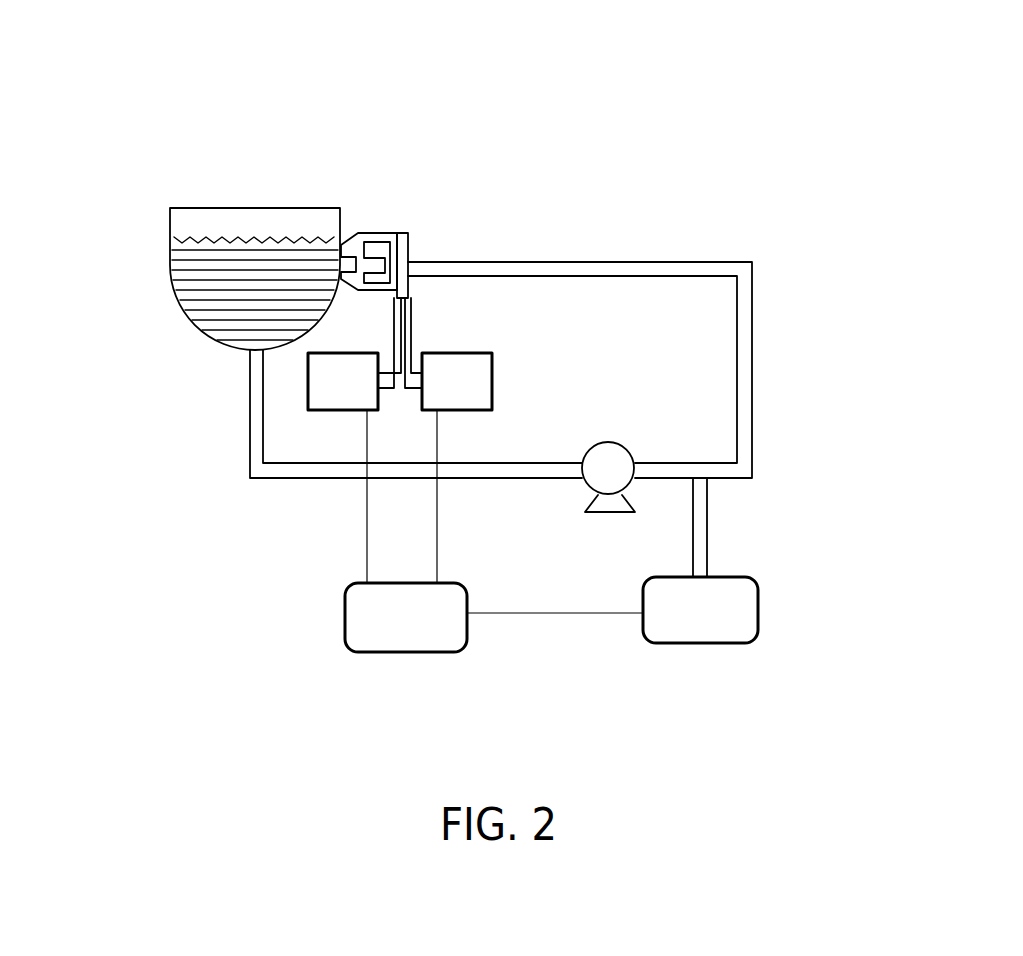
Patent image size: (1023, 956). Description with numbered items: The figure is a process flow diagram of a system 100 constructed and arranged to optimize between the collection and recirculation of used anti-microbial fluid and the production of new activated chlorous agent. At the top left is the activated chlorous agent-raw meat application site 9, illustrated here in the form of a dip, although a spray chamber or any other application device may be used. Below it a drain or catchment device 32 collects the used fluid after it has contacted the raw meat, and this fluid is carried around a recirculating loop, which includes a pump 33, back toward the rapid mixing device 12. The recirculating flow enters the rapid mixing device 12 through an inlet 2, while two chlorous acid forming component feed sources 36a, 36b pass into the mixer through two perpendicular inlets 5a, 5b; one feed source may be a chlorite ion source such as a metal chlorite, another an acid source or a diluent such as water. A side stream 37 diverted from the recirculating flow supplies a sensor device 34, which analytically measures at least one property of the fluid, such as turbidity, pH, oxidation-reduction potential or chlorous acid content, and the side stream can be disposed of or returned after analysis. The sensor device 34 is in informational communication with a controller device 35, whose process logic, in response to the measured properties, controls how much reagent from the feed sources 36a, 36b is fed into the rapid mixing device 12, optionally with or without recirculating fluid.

The system 100 is at (818, 184).
The activated chlorous agent-raw meat application site 9 is at (213, 297).
The drain or catchment device 32 is at (257, 368).
The rapid mixing device 12 is at (368, 233).
The inlet 2 is at (412, 268).
The perpendicular inlet 5a is at (410, 297).
The perpendicular inlet 5b is at (397, 300).
The chlorous acid forming component feed source 36a is at (450, 393).
The chlorous acid forming component feed source 36b is at (342, 380).
The pump 33 is at (602, 470).
The side stream 37 is at (708, 522).
The controller device 35 is at (368, 620).
The sensor device 34 is at (728, 623).